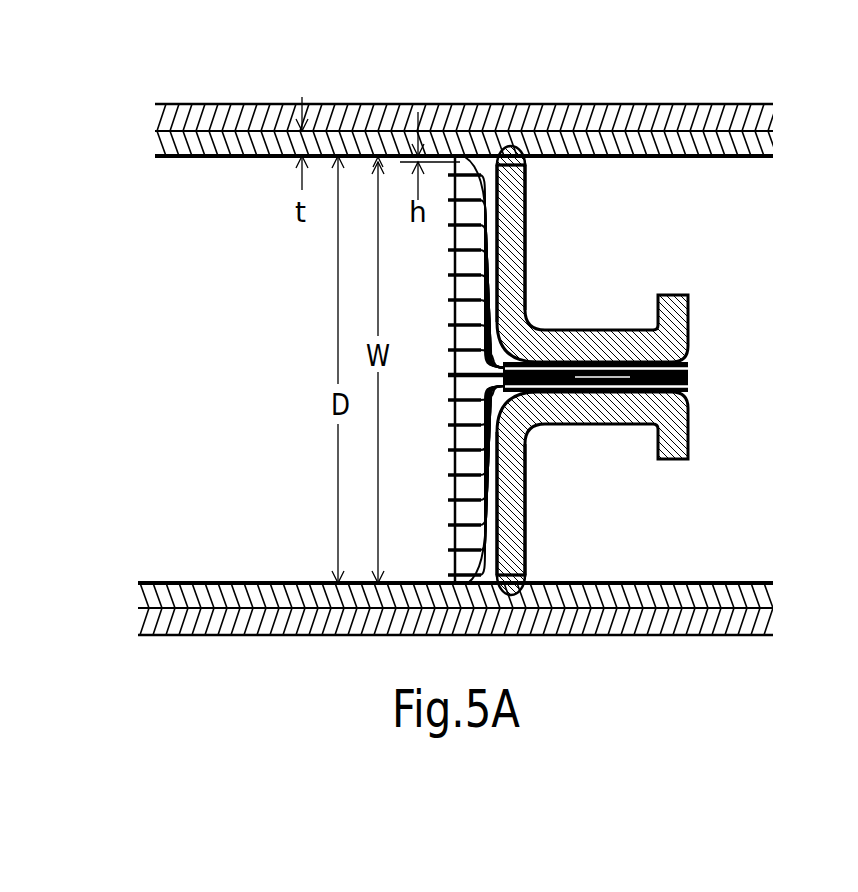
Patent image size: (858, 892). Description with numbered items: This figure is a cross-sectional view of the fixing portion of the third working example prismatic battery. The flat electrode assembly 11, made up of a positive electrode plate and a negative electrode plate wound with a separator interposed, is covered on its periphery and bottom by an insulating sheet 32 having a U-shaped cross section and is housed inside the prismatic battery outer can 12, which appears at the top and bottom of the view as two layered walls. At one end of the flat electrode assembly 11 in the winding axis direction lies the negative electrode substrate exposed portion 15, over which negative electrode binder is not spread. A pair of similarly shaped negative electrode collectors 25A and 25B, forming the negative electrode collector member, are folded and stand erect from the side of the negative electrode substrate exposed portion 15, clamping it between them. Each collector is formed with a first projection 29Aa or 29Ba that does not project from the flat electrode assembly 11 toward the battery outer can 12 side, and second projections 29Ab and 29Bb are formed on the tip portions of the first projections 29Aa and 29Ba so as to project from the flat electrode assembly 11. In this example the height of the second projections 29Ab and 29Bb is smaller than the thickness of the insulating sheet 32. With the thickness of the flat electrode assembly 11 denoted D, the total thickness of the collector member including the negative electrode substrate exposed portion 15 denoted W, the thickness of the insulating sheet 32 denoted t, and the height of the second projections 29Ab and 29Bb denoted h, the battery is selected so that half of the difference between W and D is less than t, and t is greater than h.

The flat electrode assembly 11 is at (208, 552).
The prismatic battery outer can 12 is at (538, 112).
The insulating sheet 32 is at (652, 142).
The negative electrode substrate exposed portion 15 is at (458, 142).
The negative electrode collector 25A is at (642, 254).
The negative electrode collector 25B is at (642, 493).
The first projection 29Aa is at (571, 243).
The second projection 29Ab is at (525, 166).
The first projection 29Ba is at (566, 503).
The second projection 29Bb is at (525, 575).